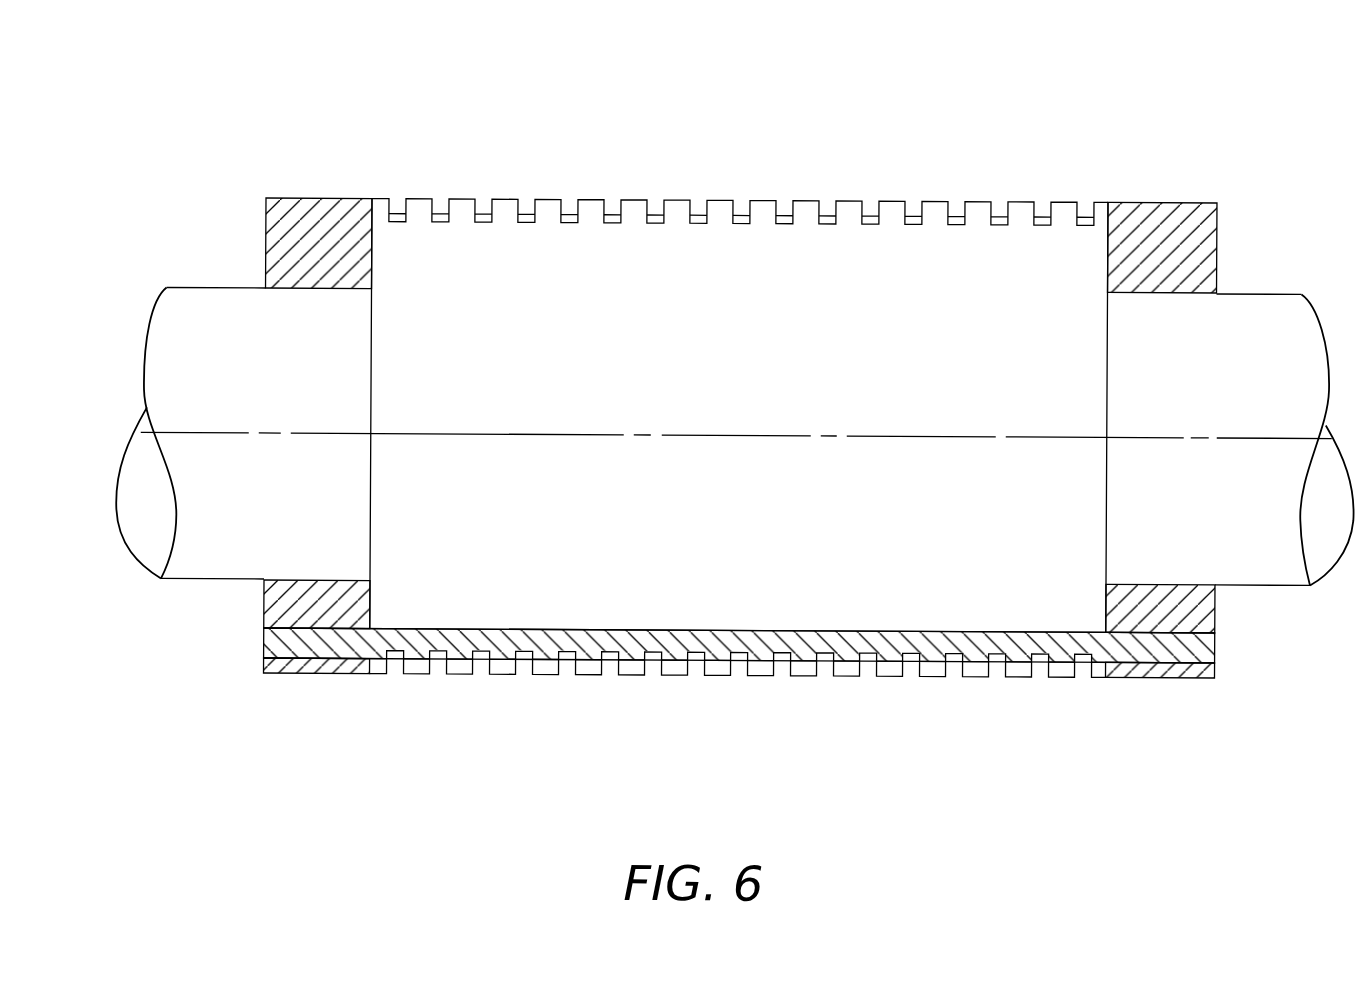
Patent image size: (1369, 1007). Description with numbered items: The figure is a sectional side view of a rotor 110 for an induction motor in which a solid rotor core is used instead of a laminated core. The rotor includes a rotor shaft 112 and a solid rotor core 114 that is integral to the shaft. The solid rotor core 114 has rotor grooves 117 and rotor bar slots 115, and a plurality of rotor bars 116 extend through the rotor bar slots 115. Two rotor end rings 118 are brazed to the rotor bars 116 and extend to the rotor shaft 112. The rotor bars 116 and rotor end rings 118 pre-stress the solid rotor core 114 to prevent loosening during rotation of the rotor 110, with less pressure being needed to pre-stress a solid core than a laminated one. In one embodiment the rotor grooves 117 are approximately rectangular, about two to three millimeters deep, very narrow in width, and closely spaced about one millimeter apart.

The rotor 110 is at (740, 403).
The rotor shaft 112 is at (242, 371).
The solid rotor core 114 is at (805, 205).
The rotor bar slots 115 is at (432, 628).
The rotor bars 116 is at (553, 641).
The rotor grooves 117 is at (518, 126).
The rotor end rings 118 is at (345, 198).